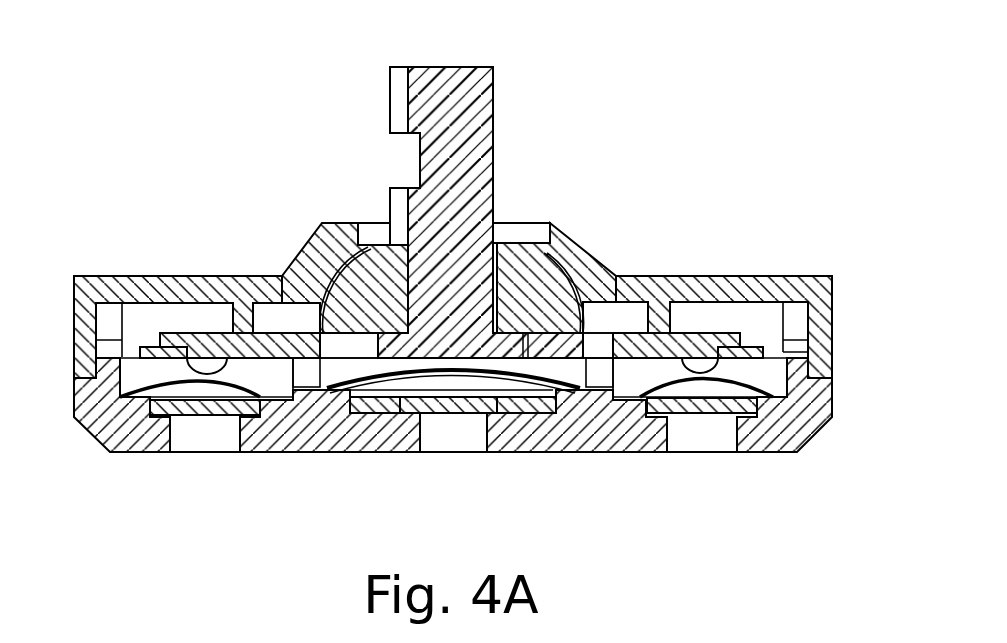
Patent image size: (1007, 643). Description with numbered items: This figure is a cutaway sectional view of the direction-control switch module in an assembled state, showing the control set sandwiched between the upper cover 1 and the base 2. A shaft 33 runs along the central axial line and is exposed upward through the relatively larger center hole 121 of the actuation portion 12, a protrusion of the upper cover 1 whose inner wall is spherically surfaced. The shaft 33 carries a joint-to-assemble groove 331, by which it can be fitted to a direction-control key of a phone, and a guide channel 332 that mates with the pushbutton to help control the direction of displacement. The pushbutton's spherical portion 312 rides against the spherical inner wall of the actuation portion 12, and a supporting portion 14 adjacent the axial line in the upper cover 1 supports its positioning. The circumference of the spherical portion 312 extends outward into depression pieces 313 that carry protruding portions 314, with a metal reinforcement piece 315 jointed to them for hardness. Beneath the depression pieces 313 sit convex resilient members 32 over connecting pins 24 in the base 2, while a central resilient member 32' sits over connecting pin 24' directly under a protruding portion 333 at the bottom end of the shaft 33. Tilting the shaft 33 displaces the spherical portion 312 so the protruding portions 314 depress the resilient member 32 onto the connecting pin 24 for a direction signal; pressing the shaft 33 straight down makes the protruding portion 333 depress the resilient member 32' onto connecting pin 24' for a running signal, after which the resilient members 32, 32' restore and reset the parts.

The upper cover 1 is at (788, 278).
The base 2 is at (590, 433).
The actuation portion 12 is at (603, 253).
The center hole 121 is at (513, 233).
The supporting portion 14 is at (638, 320).
The connecting pin 24 is at (722, 451).
The connecting pin 24' is at (498, 465).
The spherical portion 312 is at (350, 287).
The depression pieces 313 is at (210, 346).
The protruding portions 314 is at (190, 418).
The reinforcement piece 315 is at (157, 343).
The resilient member 32 is at (706, 450).
The resilient member 32' is at (453, 452).
The shaft 33 is at (460, 72).
The joint-to-assemble groove 331 is at (396, 154).
The guide channel 332 is at (400, 195).
The protruding portion 333 is at (440, 412).